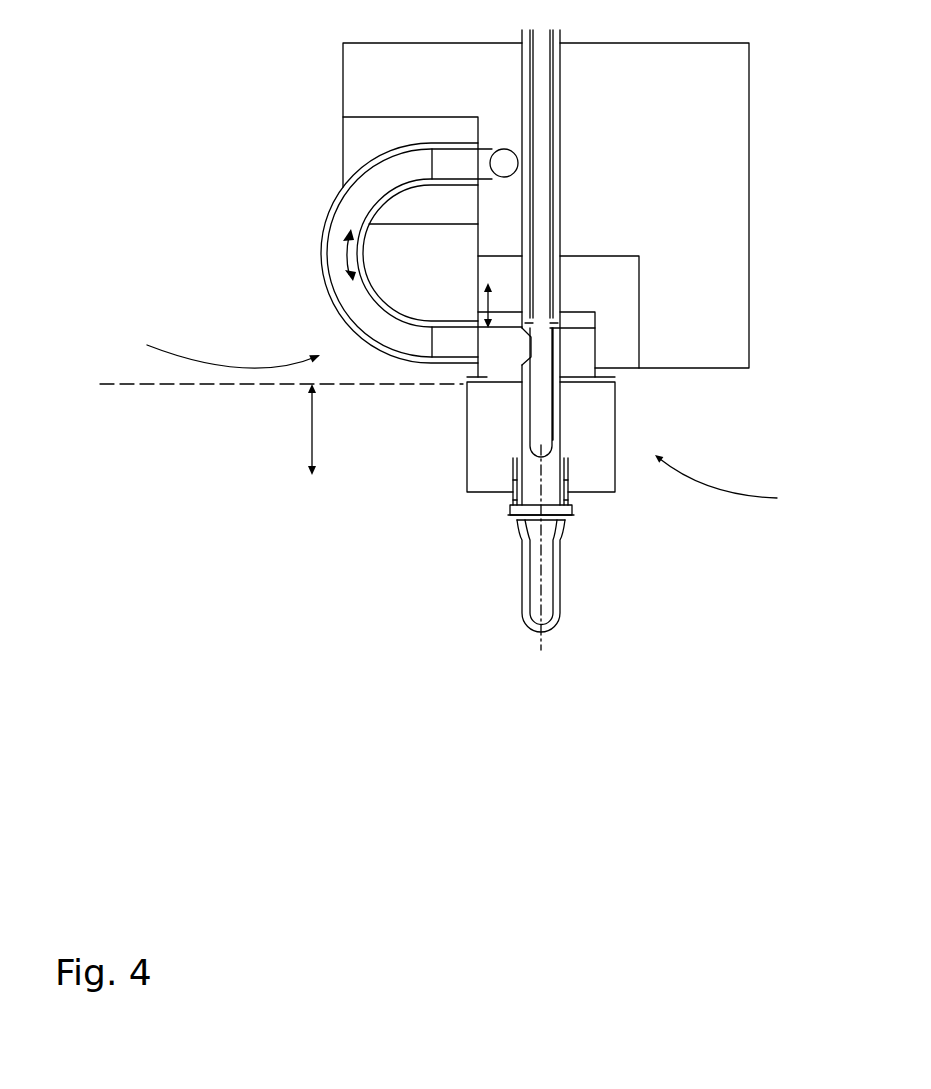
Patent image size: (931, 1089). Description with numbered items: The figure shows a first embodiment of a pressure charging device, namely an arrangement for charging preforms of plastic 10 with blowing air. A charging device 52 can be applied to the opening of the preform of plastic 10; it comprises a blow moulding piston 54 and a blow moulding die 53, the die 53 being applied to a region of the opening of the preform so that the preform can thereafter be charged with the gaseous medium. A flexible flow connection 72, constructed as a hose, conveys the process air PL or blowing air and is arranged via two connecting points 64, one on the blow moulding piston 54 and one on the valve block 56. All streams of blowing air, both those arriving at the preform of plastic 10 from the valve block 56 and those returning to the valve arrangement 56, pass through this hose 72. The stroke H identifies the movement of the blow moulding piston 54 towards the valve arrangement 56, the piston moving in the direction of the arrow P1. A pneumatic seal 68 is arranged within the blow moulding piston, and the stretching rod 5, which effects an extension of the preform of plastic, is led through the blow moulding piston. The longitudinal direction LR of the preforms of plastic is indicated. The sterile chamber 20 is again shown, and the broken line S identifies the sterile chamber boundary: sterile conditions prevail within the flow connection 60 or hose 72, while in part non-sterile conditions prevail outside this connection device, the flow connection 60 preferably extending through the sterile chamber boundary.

The stretching rod 5 is at (527, 127).
The connecting points 64 is at (467, 173).
The flexible flow connection 72 is at (357, 220).
The process air PL is at (342, 256).
The valve block 56 is at (667, 175).
The pneumatic seal 68 is at (541, 345).
The blow moulding piston 54 is at (570, 357).
The stroke of the blow moulding piston H is at (485, 307).
The flow connection 60 is at (287, 382).
The sterile chamber 20 is at (274, 354).
The sterile chamber boundary S is at (225, 343).
The direction of movement of the blow moulding piston P1 is at (332, 429).
The charging device 52 is at (645, 444).
The blow moulding die 53 is at (572, 488).
The preform of plastic 10 is at (548, 590).
The longitudinal direction of the preforms of plastic LR is at (564, 563).